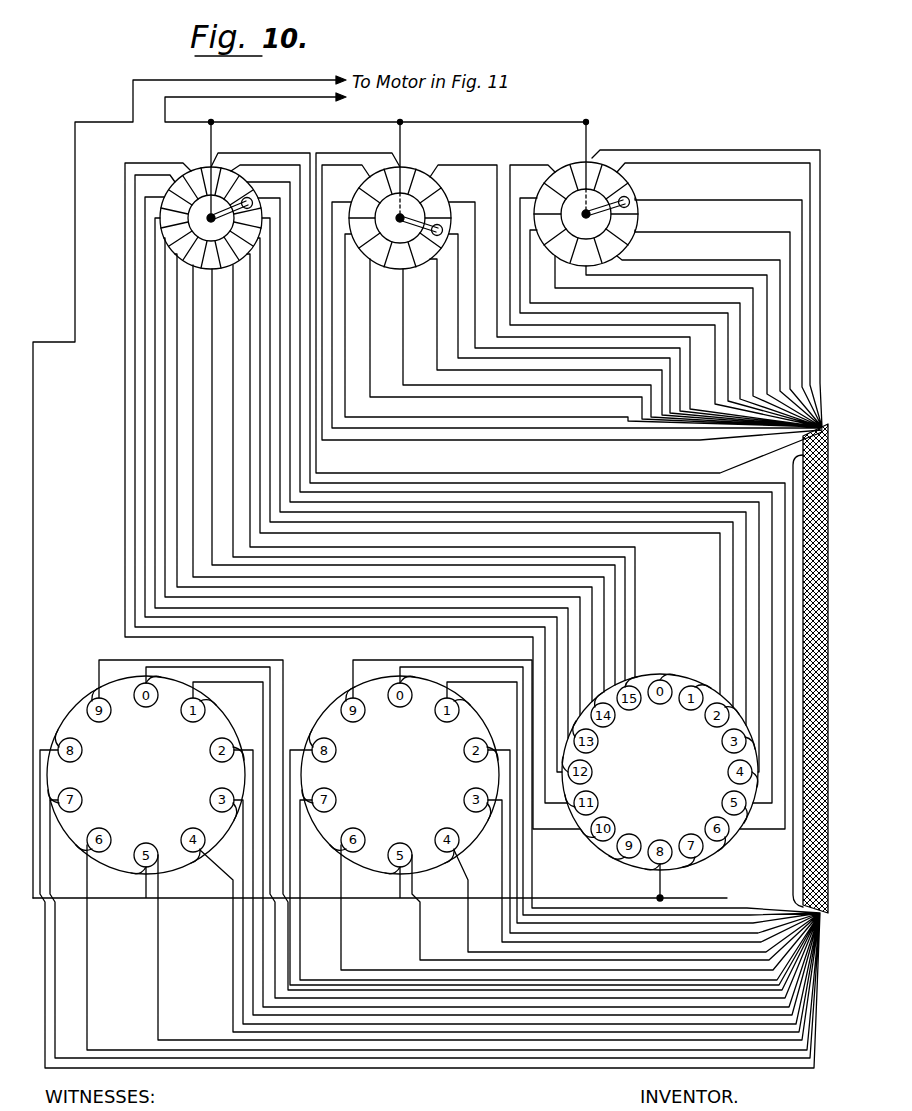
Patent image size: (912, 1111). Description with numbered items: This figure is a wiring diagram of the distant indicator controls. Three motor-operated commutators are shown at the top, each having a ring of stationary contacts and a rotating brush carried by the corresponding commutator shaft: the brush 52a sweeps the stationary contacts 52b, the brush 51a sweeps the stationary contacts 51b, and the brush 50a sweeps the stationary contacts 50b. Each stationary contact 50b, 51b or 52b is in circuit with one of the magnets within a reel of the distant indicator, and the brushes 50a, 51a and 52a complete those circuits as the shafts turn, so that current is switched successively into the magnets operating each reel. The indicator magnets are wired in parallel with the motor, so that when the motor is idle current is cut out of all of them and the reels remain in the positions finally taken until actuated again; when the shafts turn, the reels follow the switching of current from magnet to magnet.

The brush 52a is at (211, 218).
The stationary contact 52b is at (252, 197).
The brush 51a is at (400, 218).
The stationary contact 51b is at (444, 226).
The brush 50a is at (586, 214).
The stationary contact 50b is at (631, 199).